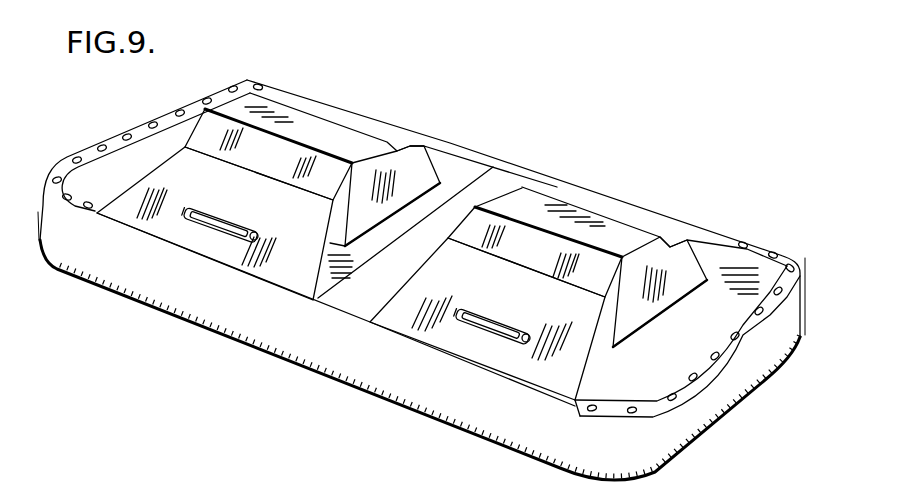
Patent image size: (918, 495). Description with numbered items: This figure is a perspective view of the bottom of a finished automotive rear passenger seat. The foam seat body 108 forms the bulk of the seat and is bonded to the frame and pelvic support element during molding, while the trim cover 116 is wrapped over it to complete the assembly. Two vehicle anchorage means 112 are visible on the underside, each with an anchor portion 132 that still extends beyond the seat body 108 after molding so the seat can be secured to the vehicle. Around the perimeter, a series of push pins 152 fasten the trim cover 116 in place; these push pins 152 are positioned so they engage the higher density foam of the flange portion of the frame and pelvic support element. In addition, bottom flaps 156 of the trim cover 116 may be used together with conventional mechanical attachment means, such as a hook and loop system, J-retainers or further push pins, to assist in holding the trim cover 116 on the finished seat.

The seat body 108 is at (718, 338).
The vehicle anchorage means 112 is at (262, 213).
The trim cover 116 is at (740, 400).
The anchor portion 132 is at (222, 210).
The push pins 152 is at (124, 135).
The bottom flaps 156 is at (293, 272).